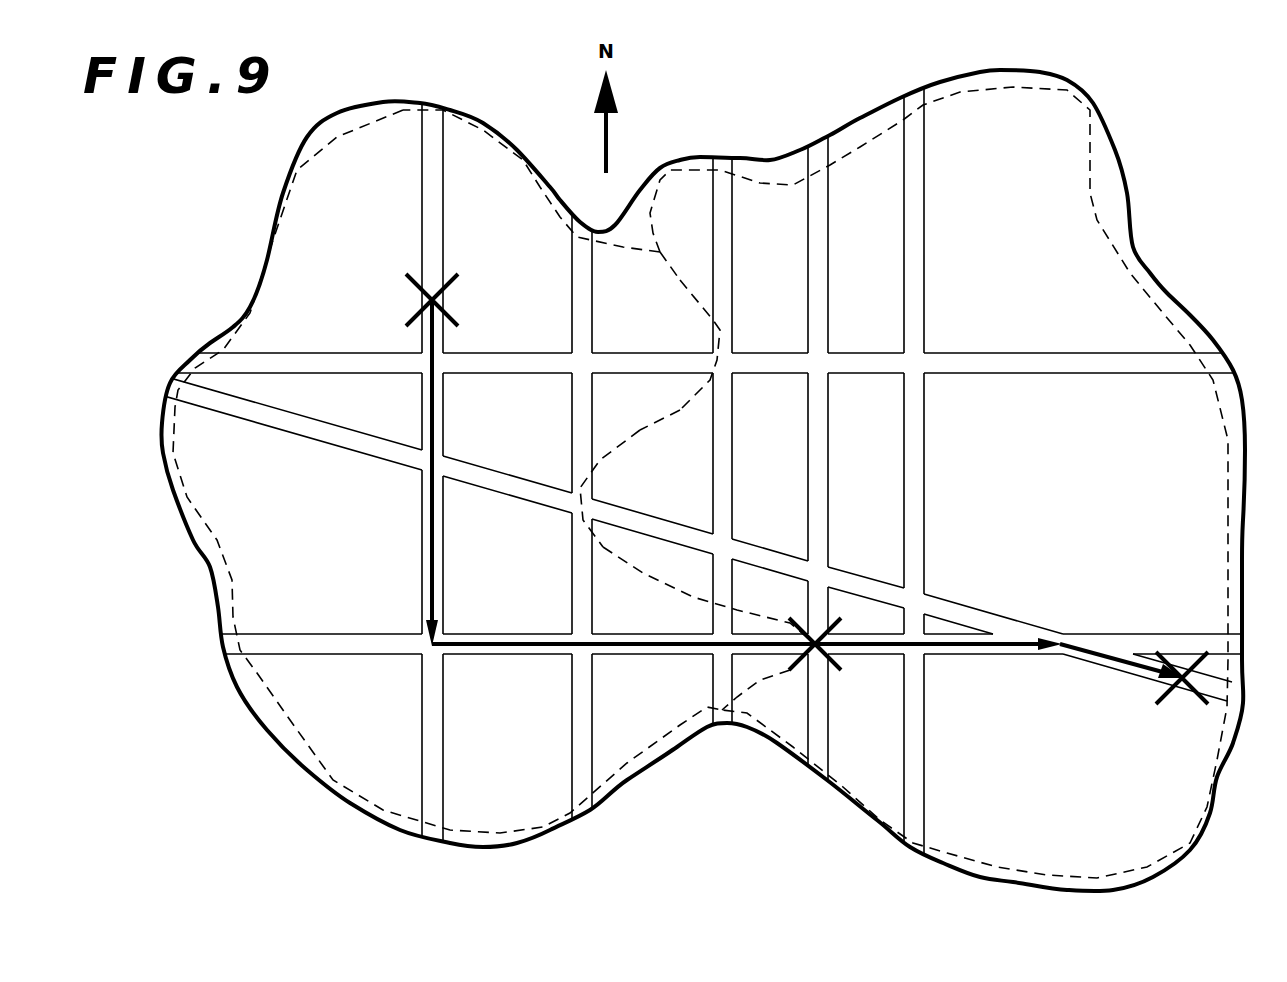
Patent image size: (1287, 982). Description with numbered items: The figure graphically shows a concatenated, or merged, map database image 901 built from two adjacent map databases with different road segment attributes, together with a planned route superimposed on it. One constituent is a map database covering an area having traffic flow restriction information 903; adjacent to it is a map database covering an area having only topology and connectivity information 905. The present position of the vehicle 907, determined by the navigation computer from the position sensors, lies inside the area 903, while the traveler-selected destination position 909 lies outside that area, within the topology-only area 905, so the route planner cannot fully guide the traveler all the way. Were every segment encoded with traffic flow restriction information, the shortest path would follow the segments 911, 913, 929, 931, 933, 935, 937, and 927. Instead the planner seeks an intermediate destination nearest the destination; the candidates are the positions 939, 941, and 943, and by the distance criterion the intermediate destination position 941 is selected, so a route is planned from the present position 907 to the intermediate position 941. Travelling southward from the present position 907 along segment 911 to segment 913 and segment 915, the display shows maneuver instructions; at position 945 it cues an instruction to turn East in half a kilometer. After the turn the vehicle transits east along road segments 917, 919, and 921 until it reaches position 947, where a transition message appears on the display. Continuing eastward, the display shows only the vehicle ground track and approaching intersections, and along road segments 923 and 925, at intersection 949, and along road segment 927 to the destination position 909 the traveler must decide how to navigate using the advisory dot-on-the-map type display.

The concatenated map database image 901 is at (537, 843).
The area having traffic flow restriction information 903 is at (497, 136).
The area having only topology and connectivity information 905 is at (1093, 200).
The present position of the vehicle 907 is at (422, 300).
The destination position 909 is at (1182, 692).
The road segment 911 is at (420, 196).
The road segment 913 is at (443, 405).
The road segment 915 is at (443, 540).
The road segment 917 is at (487, 657).
The road segment 919 is at (645, 657).
The road segment 921 is at (760, 658).
The road segment 923 is at (865, 657).
The road segment 925 is at (964, 656).
The road segment 927 is at (1121, 667).
The road segment 929 is at (485, 468).
The road segment 931 is at (647, 514).
The road segment 933 is at (770, 549).
The road segment 935 is at (867, 578).
The road segment 937 is at (947, 594).
The candidate intermediate destination position 939 is at (567, 510).
The intermediate destination position 941 is at (813, 654).
The candidate intermediate destination position 943 is at (723, 362).
The maneuver instruction position 945 is at (432, 516).
The transition position 947 is at (748, 643).
The intersection 949 is at (1067, 637).